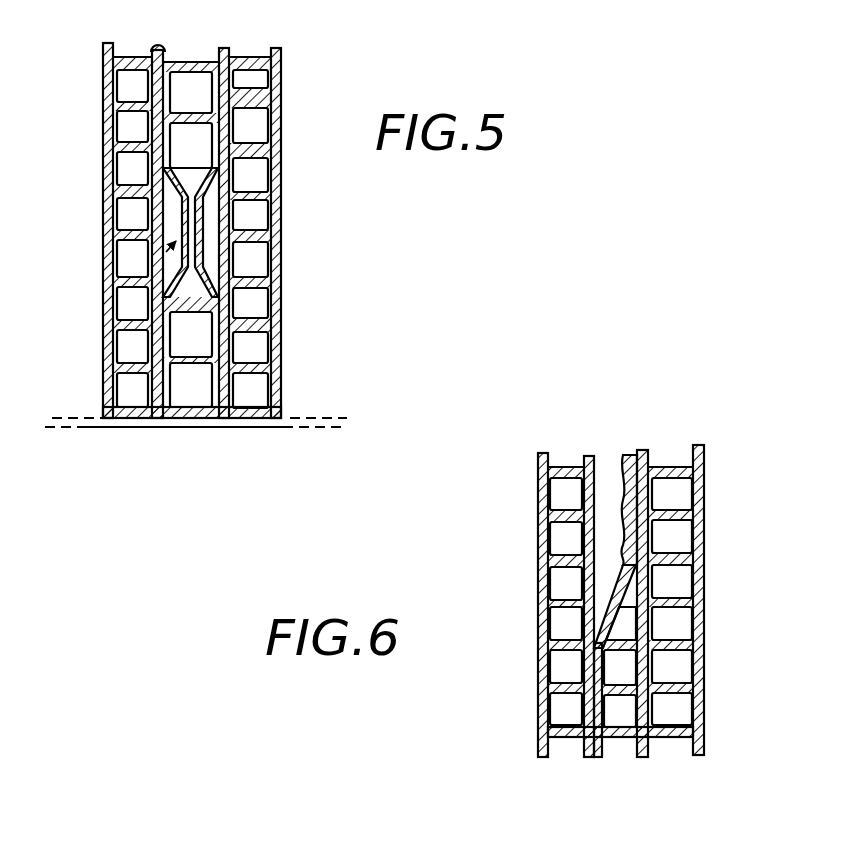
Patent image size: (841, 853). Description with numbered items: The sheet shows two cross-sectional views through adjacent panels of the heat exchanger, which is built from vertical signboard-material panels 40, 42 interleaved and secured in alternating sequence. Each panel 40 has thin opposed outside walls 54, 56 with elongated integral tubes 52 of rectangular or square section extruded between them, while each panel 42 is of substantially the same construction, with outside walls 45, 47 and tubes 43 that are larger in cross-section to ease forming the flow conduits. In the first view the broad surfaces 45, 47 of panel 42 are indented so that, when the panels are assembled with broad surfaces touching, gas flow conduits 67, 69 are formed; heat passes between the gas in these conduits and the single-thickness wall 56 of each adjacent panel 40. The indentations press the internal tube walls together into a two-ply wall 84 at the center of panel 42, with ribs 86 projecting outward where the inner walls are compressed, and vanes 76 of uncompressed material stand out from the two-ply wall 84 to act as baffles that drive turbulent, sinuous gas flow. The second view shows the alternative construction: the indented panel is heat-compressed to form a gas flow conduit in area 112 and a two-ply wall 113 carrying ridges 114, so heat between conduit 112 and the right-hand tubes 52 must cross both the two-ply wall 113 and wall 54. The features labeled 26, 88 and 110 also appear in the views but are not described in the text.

In FIG. 5, the substrate 26 is at (117, 424).
In FIG. 5, the panel 40 is at (130, 50).
In FIG. 6, the panel 40 is at (562, 462).
In FIG. 5, the panel 42 is at (204, 27).
In FIG. 5, the tubes 43 is at (240, 92).
In FIG. 5, the outside wall 45 is at (240, 130).
In FIG. 5, the outside wall 47 is at (105, 208).
In FIG. 5, the tubes 52 is at (133, 80).
In FIG. 6, the tubes 52 is at (563, 495).
In FIG. 5, the outside wall 54 is at (105, 267).
In FIG. 6, the outside wall 54 is at (653, 582).
In FIG. 5, the outside wall 56 is at (183, 336).
In FIG. 6, the outside wall 56 is at (652, 643).
In FIG. 5, the gas flow conduit 67 is at (160, 290).
In FIG. 5, the gas flow conduit 69 is at (216, 263).
In FIG. 5, the vanes 76 is at (226, 84).
In FIG. 5, the two-ply wall 84 is at (226, 215).
In FIG. 5, the ribs 86 is at (205, 222).
In FIG. 6, the gap 88 is at (603, 458).
In FIG. 6, the junction 110 is at (600, 688).
In FIG. 6, the gas flow conduit 112 is at (625, 503).
In FIG. 6, the two-ply wall 113 is at (700, 452).
In FIG. 6, the ridges 114 is at (640, 522).